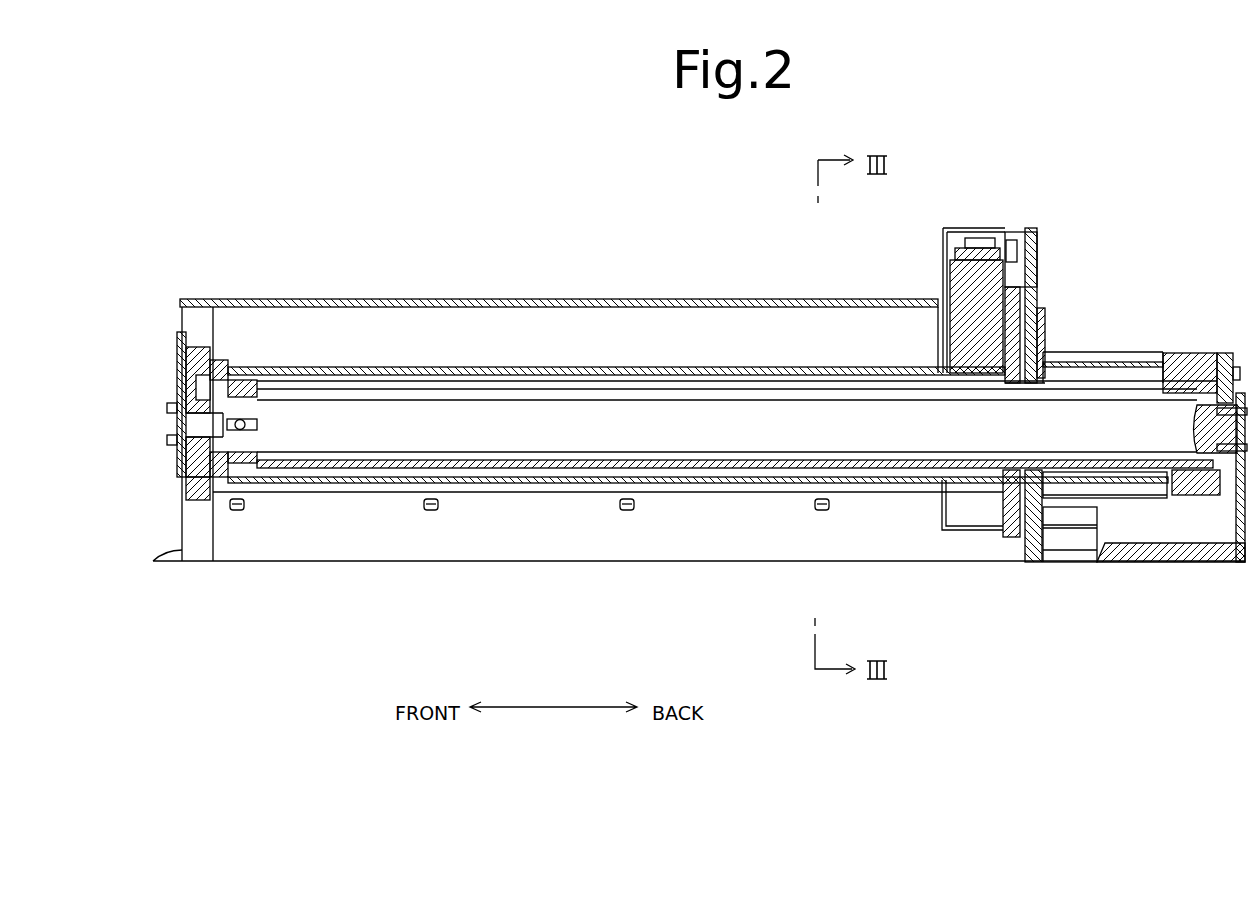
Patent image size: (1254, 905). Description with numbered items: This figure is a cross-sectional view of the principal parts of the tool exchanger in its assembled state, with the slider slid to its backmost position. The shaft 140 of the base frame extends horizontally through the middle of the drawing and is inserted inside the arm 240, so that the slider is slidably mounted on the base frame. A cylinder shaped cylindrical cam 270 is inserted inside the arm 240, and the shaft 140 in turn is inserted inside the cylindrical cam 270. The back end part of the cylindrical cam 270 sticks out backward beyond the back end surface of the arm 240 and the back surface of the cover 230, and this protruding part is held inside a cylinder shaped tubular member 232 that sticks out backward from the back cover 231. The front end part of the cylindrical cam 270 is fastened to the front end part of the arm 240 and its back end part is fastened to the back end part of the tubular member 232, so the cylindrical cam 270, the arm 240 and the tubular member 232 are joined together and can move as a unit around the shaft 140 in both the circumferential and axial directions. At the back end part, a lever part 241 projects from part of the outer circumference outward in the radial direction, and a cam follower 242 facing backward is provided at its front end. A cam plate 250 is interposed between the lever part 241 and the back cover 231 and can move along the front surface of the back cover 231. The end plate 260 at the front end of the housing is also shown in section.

The shaft 140 is at (547, 435).
The cover 230 is at (805, 300).
The back cover 231 is at (1033, 275).
The tubular member 232 is at (1125, 352).
The arm 240 is at (775, 478).
The lever part 241 is at (965, 305).
The cam follower 242 is at (1033, 250).
The cam plate 250 is at (1015, 310).
The end plate 260 is at (175, 343).
The cylindrical cam 270 is at (702, 468).